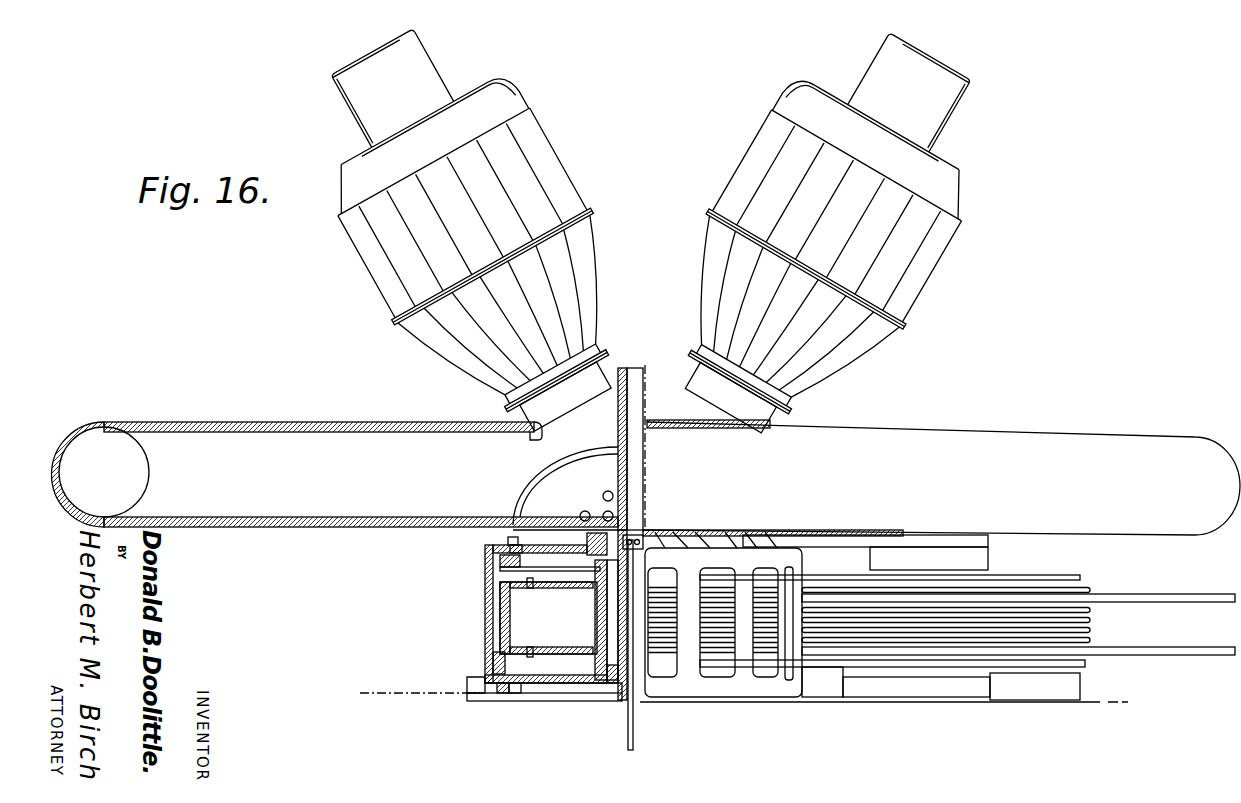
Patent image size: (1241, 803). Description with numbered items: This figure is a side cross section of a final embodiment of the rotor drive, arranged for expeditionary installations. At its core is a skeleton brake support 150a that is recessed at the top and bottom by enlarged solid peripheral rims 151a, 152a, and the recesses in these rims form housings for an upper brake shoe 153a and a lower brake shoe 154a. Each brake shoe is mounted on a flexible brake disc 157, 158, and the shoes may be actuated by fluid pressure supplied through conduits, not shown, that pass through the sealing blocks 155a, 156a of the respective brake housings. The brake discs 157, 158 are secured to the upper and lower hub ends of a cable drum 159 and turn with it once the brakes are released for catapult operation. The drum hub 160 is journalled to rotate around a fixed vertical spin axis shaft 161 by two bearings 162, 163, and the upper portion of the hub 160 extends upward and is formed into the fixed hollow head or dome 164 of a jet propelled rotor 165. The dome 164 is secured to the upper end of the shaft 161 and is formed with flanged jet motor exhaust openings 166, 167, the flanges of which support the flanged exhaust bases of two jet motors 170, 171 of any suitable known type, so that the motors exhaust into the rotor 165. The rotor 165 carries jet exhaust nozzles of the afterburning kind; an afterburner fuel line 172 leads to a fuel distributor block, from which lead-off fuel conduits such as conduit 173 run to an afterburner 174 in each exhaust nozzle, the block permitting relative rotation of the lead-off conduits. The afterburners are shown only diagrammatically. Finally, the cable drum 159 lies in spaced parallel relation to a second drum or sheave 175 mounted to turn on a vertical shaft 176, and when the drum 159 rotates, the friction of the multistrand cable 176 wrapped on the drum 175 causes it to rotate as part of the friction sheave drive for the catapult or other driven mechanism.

The skeleton brake support 150a is at (491, 625).
The upper peripheral rim 151a is at (500, 561).
The lower peripheral rim 152a is at (503, 693).
The upper brake shoe 153a is at (512, 537).
The lower brake shoe 154a is at (490, 689).
The sealing block 155a is at (587, 542).
The sealing block 156a is at (513, 695).
The flexible brake disc 157 is at (503, 572).
The flexible brake disc 158 is at (580, 695).
The cable drum 159 is at (500, 656).
The drum hub 160 is at (600, 580).
The fixed vertical spin axis shaft 161 is at (618, 684).
The bearing 162 is at (624, 672).
The bearing 163 is at (622, 570).
The hollow head or dome 164 is at (517, 545).
The jet propelled rotor 165 is at (891, 437).
The flanged jet motor exhaust opening 166 is at (606, 384).
The flanged jet motor exhaust opening 167 is at (780, 423).
The jet motor 170 is at (548, 177).
The jet motor 171 is at (945, 238).
The afterburner fuel line 172 is at (634, 733).
The lead-off fuel conduit 173 is at (588, 518).
The afterburner 174 is at (320, 428).
The second drum or sheave 175 is at (1086, 588).
The vertical shaft 176 is at (972, 568).